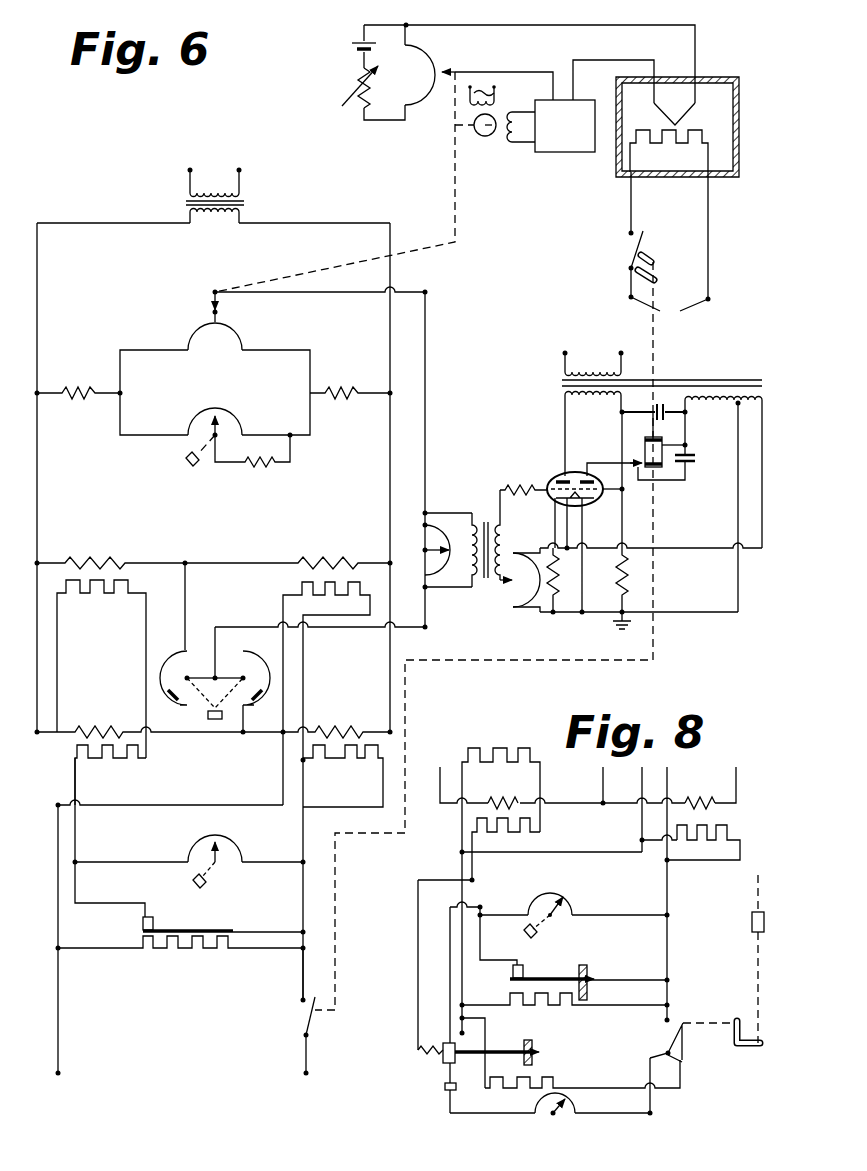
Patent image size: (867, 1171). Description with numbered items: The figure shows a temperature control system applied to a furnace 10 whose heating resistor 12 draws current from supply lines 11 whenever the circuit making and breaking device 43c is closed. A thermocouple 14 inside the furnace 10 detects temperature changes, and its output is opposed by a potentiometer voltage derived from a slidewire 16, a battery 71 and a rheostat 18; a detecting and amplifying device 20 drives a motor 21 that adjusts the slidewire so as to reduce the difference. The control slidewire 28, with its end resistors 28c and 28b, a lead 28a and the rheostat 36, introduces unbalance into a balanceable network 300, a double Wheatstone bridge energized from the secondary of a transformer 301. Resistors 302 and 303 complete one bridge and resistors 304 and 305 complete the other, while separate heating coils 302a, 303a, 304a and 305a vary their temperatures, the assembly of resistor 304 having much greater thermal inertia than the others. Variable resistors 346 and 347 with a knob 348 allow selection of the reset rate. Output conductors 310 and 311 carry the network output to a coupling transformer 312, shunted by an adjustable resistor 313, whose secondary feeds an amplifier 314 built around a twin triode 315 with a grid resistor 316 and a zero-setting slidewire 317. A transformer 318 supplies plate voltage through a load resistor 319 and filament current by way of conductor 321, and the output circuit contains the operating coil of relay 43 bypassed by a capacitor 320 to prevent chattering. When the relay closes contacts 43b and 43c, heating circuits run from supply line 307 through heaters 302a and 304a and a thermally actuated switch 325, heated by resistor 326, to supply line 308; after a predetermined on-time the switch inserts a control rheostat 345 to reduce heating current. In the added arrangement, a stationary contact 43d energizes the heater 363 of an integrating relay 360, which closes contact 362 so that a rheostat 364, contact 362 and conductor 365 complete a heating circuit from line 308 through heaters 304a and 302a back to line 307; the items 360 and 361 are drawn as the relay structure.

In FIG. 6, the battery 71 is at (352, 45).
In FIG. 6, the rheostat 18 is at (352, 100).
In FIG. 6, the slidewire 16 is at (433, 64).
In FIG. 6, the motor 21 is at (485, 137).
In FIG. 6, the detecting and amplifying device 20 is at (568, 153).
In FIG. 6, the thermocouple 14 is at (660, 104).
In FIG. 6, the furnace 10 is at (722, 142).
In FIG. 6, the heating resistor 12 is at (678, 140).
In FIG. 6, the circuit making and breaking device 43c is at (628, 248).
In FIG. 6, the supply lines 11 is at (671, 312).
In FIG. 6, the transformer 301 is at (244, 205).
In FIG. 6, the output conductor 310 is at (326, 291).
In FIG. 6, the motor lead 28a is at (212, 303).
In FIG. 6, the control slidewire 28 is at (243, 334).
In FIG. 6, the end coil or resistor 28c is at (78, 387).
In FIG. 6, the end coil or resistor 28b is at (345, 389).
In FIG. 6, the rheostat 36 is at (232, 413).
In FIG. 6, the balanceable electrical network 300 is at (240, 501).
In FIG. 6, the transformer 318 is at (560, 383).
In FIG. 6, the twin triode 315 is at (572, 472).
In FIG. 6, the relay 43 is at (664, 446).
In FIG. 8, the relay 43 is at (751, 922).
In FIG. 6, the capacitor 320 is at (689, 466).
In FIG. 6, the conductor 321 is at (738, 509).
In FIG. 6, the load resistor 319 is at (628, 584).
In FIG. 6, the amplifier 314 is at (590, 655).
In FIG. 6, the zero-setting slidewire 317 is at (520, 606).
In FIG. 6, the grid resistor 316 is at (521, 487).
In FIG. 6, the adjustable resistor 313 is at (429, 533).
In FIG. 6, the coupling transformer 312 is at (486, 525).
In FIG. 6, the output conductor 311 is at (410, 629).
In FIG. 6, the resistor 302 is at (96, 563).
In FIG. 6, the resistor 303 is at (331, 563).
In FIG. 6, the heating coil 302a is at (113, 592).
In FIG. 8, the heating coil 302a is at (510, 762).
In FIG. 6, the heating coil 303a is at (298, 592).
In FIG. 6, the variable resistor 346 is at (180, 655).
In FIG. 6, the variable resistor 347 is at (268, 680).
In FIG. 6, the knob 348 is at (207, 716).
In FIG. 6, the resistor 304 is at (110, 731).
In FIG. 8, the resistor 304 is at (512, 792).
In FIG. 6, the resistor 305 is at (332, 731).
In FIG. 8, the resistor 305 is at (702, 803).
In FIG. 6, the heating coil 304a is at (106, 760).
In FIG. 8, the heating coil 304a is at (506, 849).
In FIG. 6, the heating coil 305a is at (360, 763).
In FIG. 8, the heating coil 305a is at (718, 842).
In FIG. 6, the control rheostat 345 is at (250, 839).
In FIG. 8, the control rheostat 345 is at (558, 902).
In FIG. 6, the thermally actuated switch 325 is at (152, 930).
In FIG. 8, the thermally actuated switch 325 is at (546, 978).
In FIG. 6, the resistor 326 is at (206, 950).
In FIG. 8, the resistor 326 is at (552, 1006).
In FIG. 6, the supply line 307 is at (60, 1024).
In FIG. 8, the supply line 307 is at (460, 1034).
In FIG. 6, the contact 43b is at (312, 1011).
In FIG. 8, the contact 43b is at (684, 1024).
In FIG. 6, the supply line 308 is at (305, 1047).
In FIG. 8, the supply line 308 is at (674, 1063).
In FIG. 8, the conductor 365 is at (418, 927).
In FIG. 8, the integrating type of relay 360 is at (497, 1044).
In FIG. 8, the relay coil 361 is at (442, 1055).
In FIG. 8, the contact 362 is at (445, 1087).
In FIG. 8, the heater 363 is at (512, 1090).
In FIG. 8, the rheostat 364 is at (568, 1102).
In FIG. 8, the stationary contact 43d is at (682, 1032).